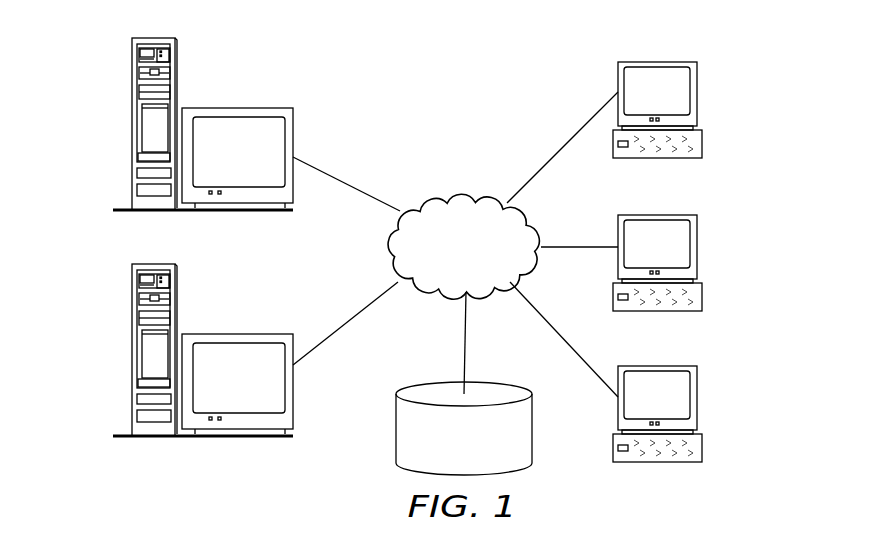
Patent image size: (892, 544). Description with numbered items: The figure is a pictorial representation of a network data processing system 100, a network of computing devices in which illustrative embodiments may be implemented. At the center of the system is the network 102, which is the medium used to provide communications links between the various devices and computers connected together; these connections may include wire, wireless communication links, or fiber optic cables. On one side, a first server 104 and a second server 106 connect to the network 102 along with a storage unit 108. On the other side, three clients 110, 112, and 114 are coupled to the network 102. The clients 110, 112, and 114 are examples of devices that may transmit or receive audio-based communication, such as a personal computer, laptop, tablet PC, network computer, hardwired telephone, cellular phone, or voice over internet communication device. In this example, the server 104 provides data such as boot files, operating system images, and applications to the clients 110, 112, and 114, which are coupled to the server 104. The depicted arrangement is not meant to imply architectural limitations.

The network data processing system 100 is at (522, 78).
The network 102 is at (432, 192).
The server 104 is at (133, 125).
The server 106 is at (133, 351).
The storage unit 108 is at (395, 440).
The client 110 is at (697, 92).
The client 112 is at (697, 245).
The client 114 is at (697, 395).